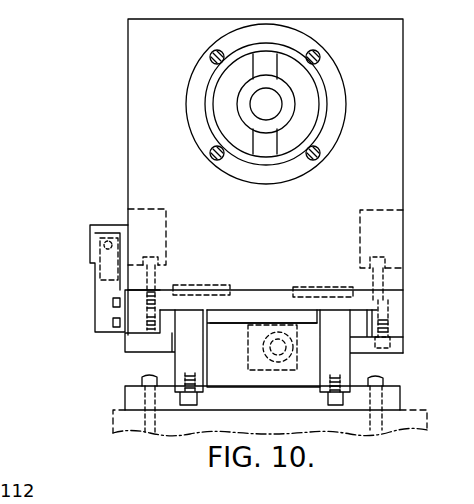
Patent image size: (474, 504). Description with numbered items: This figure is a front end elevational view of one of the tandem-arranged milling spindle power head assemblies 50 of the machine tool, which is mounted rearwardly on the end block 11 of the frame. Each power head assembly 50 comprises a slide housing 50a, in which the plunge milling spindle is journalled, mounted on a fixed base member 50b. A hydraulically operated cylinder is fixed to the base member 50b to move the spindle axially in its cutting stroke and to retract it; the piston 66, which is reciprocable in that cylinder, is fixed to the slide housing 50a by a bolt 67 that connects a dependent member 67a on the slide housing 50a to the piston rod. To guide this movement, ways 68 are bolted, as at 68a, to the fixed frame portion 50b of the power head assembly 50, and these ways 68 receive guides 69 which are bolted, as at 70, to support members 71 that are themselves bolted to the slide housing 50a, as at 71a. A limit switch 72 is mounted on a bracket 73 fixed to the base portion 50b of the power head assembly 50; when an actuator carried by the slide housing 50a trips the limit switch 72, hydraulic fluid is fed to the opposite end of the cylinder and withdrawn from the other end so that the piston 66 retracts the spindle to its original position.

The milling spindle power head assembly 50 is at (120, 130).
The slide housing 50a is at (388, 195).
The base member 50b is at (137, 392).
The end block 11 is at (402, 430).
The piston 66 is at (250, 355).
The bolt 67 is at (262, 340).
The dependent member 67a is at (260, 325).
The way 68 is at (183, 352).
The bolt 68a is at (258, 424).
The guide 69 is at (405, 338).
The bolt 70 is at (122, 337).
The support member 71 is at (388, 305).
The bolt 71a is at (155, 278).
The limit switch 72 is at (107, 280).
The bracket 73 is at (98, 277).